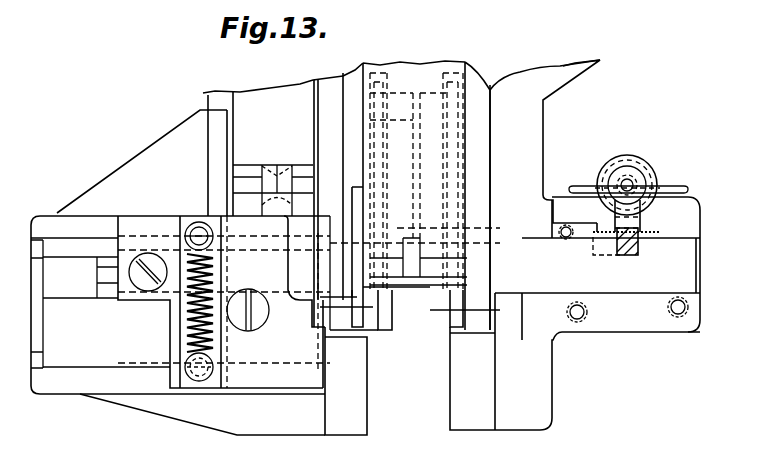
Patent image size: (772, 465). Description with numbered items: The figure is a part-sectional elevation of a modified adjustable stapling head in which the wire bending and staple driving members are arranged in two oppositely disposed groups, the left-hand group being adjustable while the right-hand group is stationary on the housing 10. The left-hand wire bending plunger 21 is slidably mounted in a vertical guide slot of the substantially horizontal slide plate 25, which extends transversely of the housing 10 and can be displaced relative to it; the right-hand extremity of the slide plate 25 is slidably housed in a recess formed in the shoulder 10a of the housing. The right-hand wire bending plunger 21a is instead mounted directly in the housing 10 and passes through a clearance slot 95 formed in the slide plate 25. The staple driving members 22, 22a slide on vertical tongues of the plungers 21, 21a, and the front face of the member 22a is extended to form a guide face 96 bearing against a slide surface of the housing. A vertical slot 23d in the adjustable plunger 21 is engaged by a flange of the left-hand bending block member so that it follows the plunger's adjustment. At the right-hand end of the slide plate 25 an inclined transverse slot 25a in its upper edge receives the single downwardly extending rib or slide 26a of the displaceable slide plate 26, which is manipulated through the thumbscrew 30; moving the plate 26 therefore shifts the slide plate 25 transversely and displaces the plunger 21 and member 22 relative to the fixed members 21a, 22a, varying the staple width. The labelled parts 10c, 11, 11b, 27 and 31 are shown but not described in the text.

The housing 10 is at (567, 73).
The shoulder 10a is at (640, 318).
The frame sloped portion 10c is at (100, 216).
The slide block 11 is at (167, 379).
The housing block 11b is at (58, 248).
The wire bending plunger 21 is at (363, 335).
The wire bending plunger 21a is at (462, 340).
The staple driving member 22 is at (415, 307).
The staple driving member 22a is at (440, 297).
The vertical slot 23d is at (356, 186).
The slide plate 25 is at (310, 270).
The transverse slot 25a is at (630, 252).
The slide plate 26 is at (656, 226).
The rib or slide 26a is at (617, 258).
The shaft 27 is at (614, 216).
The thumbscrew 30 is at (653, 222).
The roller 31 is at (630, 157).
The clearance slot 95 is at (510, 257).
The guide face 96 is at (408, 77).